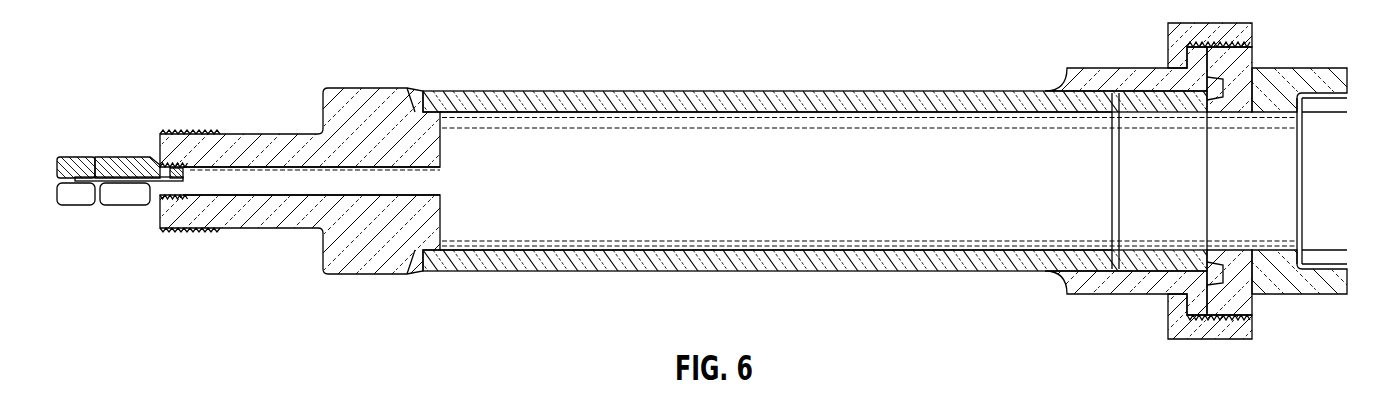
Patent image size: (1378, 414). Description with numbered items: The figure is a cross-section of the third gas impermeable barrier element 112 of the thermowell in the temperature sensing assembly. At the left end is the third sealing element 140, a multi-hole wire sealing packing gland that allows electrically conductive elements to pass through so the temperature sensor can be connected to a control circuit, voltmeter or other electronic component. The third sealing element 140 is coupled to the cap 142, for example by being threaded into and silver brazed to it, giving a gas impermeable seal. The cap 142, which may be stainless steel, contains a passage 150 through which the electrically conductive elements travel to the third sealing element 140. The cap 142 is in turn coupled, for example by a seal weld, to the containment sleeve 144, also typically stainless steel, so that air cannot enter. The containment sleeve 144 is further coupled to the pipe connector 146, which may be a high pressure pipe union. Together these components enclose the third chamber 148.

The third gas impermeable barrier element 112 is at (409, 54).
The third sealing element 140 is at (128, 156).
The cap 142 is at (279, 131).
The containment sleeve 144 is at (653, 90).
The pipe connector 146 is at (1110, 67).
The third chamber 148 is at (795, 195).
The passage 150 is at (308, 177).